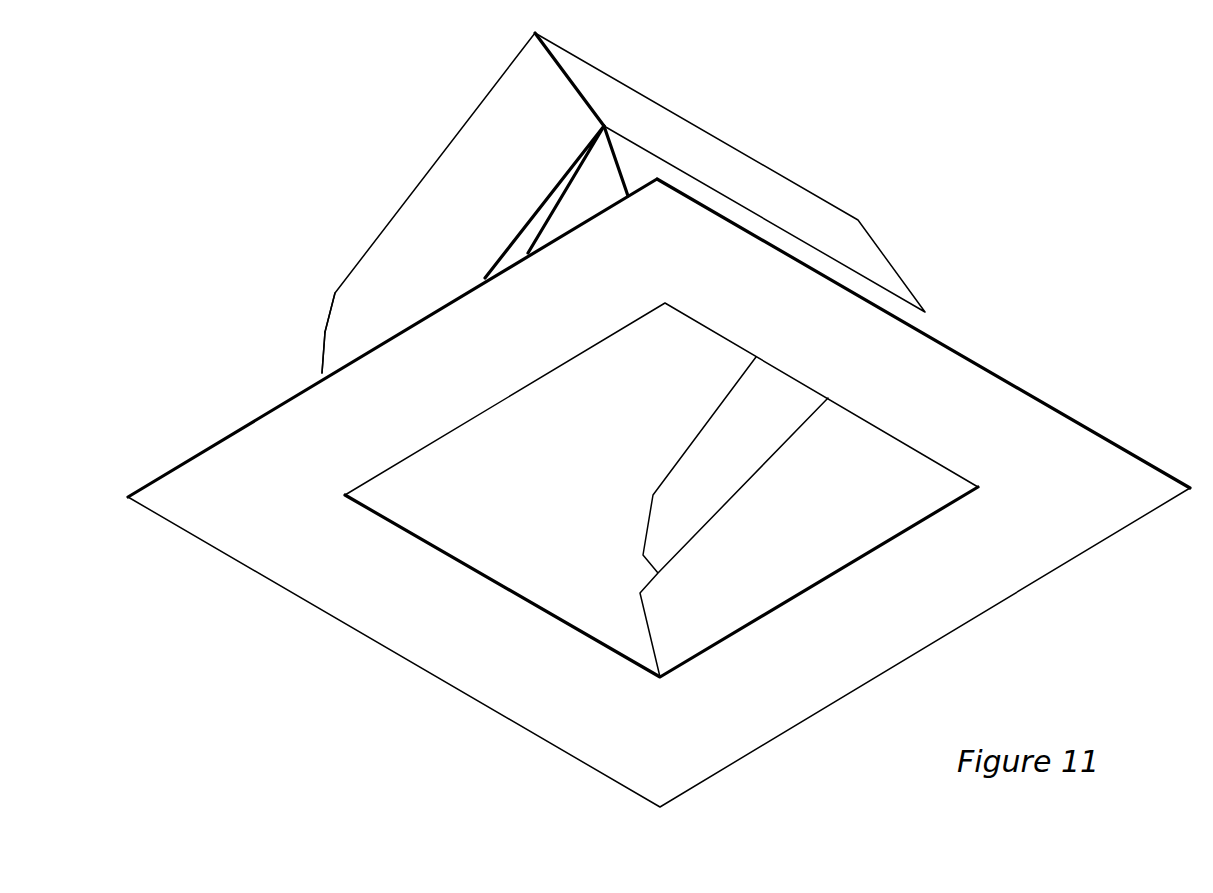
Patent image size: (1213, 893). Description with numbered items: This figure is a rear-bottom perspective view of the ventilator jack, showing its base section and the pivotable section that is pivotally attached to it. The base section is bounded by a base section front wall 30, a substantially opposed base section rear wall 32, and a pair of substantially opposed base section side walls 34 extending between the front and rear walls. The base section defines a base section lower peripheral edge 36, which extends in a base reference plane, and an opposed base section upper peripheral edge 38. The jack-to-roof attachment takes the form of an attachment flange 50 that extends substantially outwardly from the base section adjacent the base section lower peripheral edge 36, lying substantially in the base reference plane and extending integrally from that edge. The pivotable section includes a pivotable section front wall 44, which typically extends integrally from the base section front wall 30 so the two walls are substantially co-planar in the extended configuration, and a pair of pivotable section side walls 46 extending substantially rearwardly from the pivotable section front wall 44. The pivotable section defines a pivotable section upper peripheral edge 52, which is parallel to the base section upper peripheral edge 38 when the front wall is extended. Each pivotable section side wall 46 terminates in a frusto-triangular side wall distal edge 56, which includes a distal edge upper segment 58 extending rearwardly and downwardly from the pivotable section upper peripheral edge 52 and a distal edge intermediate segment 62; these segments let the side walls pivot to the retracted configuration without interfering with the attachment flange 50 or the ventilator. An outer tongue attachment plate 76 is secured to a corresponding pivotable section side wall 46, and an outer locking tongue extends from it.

The base section front wall 30 is at (918, 322).
The base section rear wall 32 is at (547, 587).
The base section side walls 34 is at (607, 180).
The base section lower peripheral edge 36 is at (370, 513).
The base section upper peripheral edge 38 is at (453, 480).
The pivotable section front wall 44 is at (863, 247).
The pivotable section side walls 46 is at (440, 179).
The attachment flange 50 is at (1108, 520).
The pivotable section upper peripheral edge 52 is at (465, 128).
The side wall distal edge 56 is at (287, 340).
The distal edge upper segment 58 is at (323, 332).
The distal edge intermediate segment 62 is at (322, 375).
The outer tongue attachment plate 76 is at (583, 162).